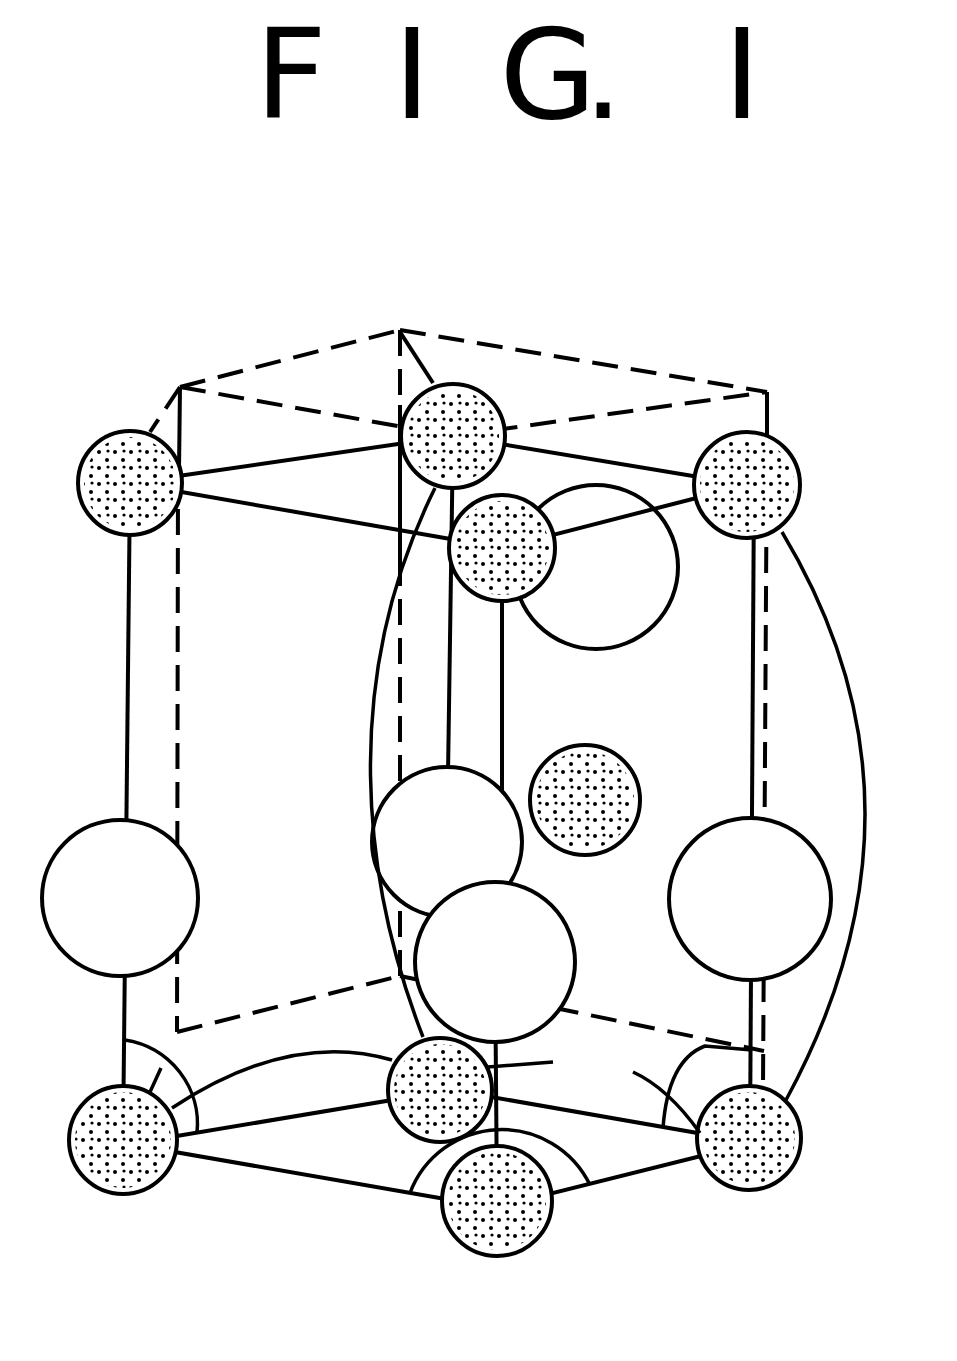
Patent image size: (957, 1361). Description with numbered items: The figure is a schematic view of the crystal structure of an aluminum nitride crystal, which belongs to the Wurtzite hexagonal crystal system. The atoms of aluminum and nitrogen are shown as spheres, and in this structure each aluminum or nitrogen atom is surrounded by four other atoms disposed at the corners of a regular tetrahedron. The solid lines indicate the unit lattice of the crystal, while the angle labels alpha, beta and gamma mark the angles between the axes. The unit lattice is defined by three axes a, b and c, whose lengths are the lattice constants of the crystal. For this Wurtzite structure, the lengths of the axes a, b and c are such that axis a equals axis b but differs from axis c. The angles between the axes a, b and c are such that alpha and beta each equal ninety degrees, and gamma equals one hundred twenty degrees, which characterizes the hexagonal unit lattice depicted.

The axis a is at (282, 1063).
The axis b is at (594, 1082).
The axis c is at (609, 794).